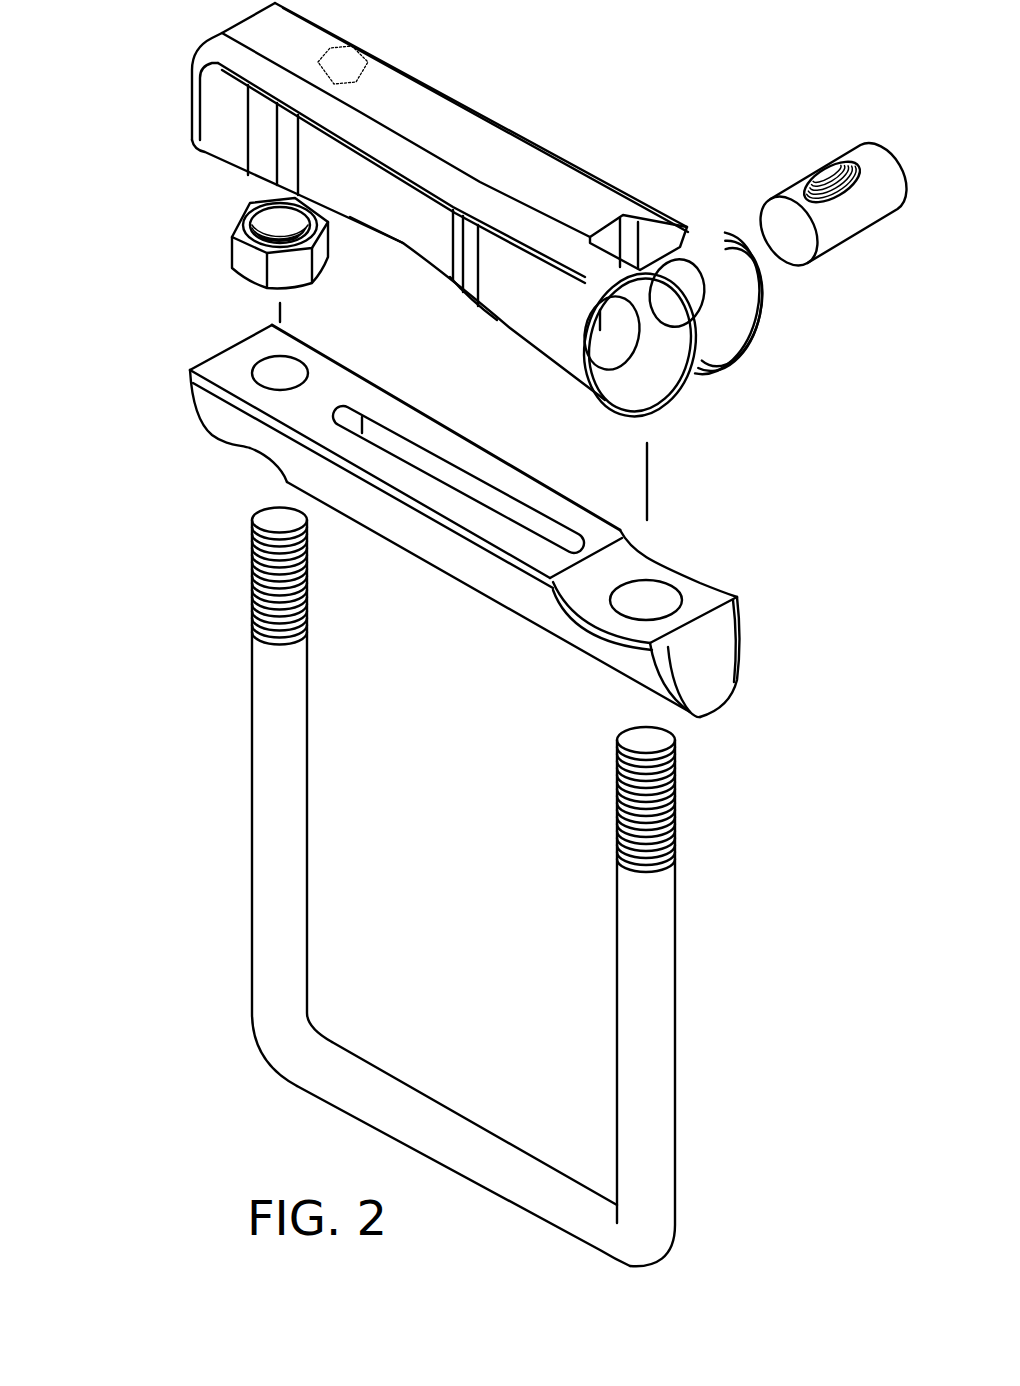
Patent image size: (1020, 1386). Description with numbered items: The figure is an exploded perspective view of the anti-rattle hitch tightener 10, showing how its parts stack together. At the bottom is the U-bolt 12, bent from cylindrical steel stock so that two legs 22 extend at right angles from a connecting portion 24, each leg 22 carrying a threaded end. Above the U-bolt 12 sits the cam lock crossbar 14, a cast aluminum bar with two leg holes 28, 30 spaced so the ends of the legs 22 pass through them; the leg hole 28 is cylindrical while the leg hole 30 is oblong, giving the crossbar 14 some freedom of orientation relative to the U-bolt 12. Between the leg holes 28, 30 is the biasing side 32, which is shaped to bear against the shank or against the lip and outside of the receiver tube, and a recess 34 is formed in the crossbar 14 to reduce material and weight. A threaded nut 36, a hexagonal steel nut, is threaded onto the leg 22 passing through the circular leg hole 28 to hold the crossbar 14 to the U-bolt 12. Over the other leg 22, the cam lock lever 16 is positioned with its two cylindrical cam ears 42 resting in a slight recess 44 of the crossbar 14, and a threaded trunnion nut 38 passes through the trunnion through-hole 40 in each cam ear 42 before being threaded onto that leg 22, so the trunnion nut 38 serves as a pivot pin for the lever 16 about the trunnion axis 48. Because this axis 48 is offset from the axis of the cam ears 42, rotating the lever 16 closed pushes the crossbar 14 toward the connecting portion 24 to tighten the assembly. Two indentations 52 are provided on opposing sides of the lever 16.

The anti-rattle hitch tightener 10 is at (110, 247).
The U-bolt 12 is at (686, 1082).
The cam lock crossbar 14 is at (730, 652).
The cam lock lever 16 is at (572, 166).
The legs 22 is at (280, 757).
The connecting portion 24 is at (417, 1107).
The leg hole 28 is at (280, 358).
The leg hole 30 is at (645, 600).
The biasing side 32 is at (440, 547).
The recess 34 is at (420, 458).
The threaded nut 36 is at (222, 242).
The threaded trunnion nut 38 is at (790, 178).
The trunnion through-hole 40 is at (603, 340).
The cam ears 42 is at (637, 387).
The recess 44 is at (590, 605).
The trunnion axis 48 is at (760, 242).
The indentations 52 is at (412, 228).